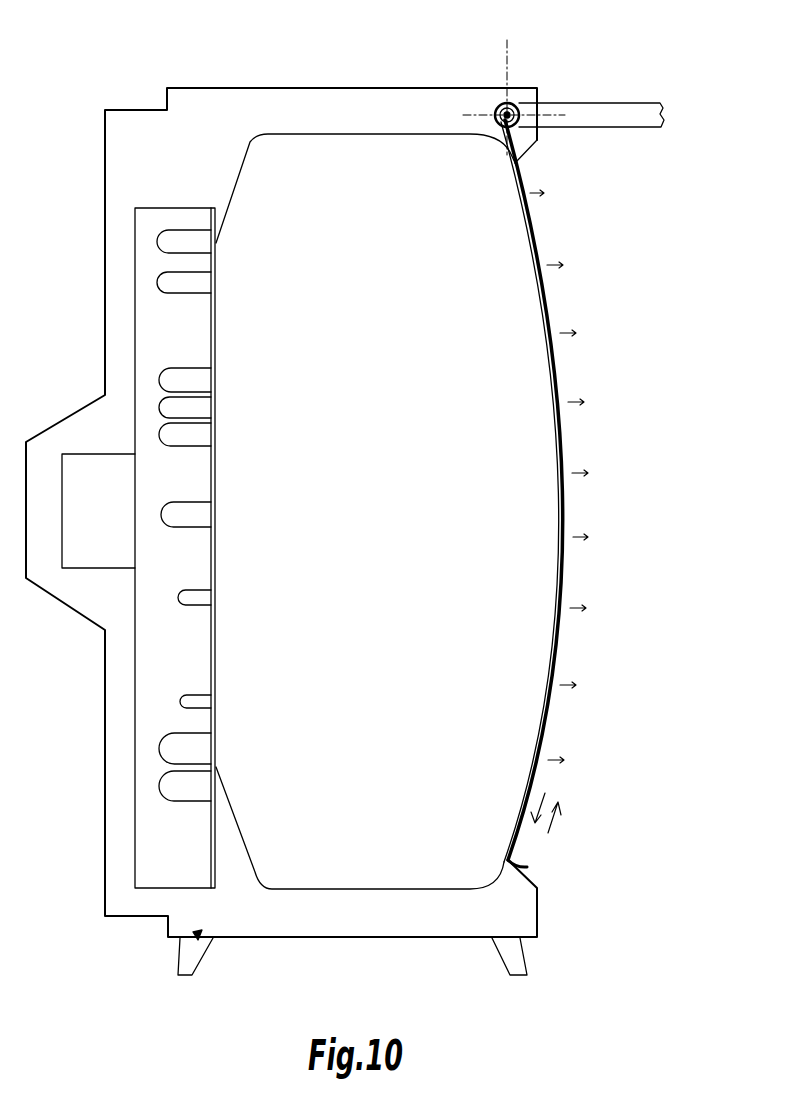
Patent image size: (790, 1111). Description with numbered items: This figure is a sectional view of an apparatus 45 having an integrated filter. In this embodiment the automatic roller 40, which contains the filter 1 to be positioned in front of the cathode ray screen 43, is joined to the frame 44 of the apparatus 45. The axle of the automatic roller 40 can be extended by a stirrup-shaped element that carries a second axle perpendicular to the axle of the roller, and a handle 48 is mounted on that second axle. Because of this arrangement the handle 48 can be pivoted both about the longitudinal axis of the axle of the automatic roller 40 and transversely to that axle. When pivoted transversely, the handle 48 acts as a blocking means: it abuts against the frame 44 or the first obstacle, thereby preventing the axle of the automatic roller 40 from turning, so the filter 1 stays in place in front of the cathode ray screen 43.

The filter 1 is at (523, 191).
The automatic roller 40 is at (512, 105).
The cathode ray screen 43 is at (545, 585).
The frame 44 is at (378, 118).
The apparatus 45 is at (387, 505).
The handle 48 is at (628, 117).